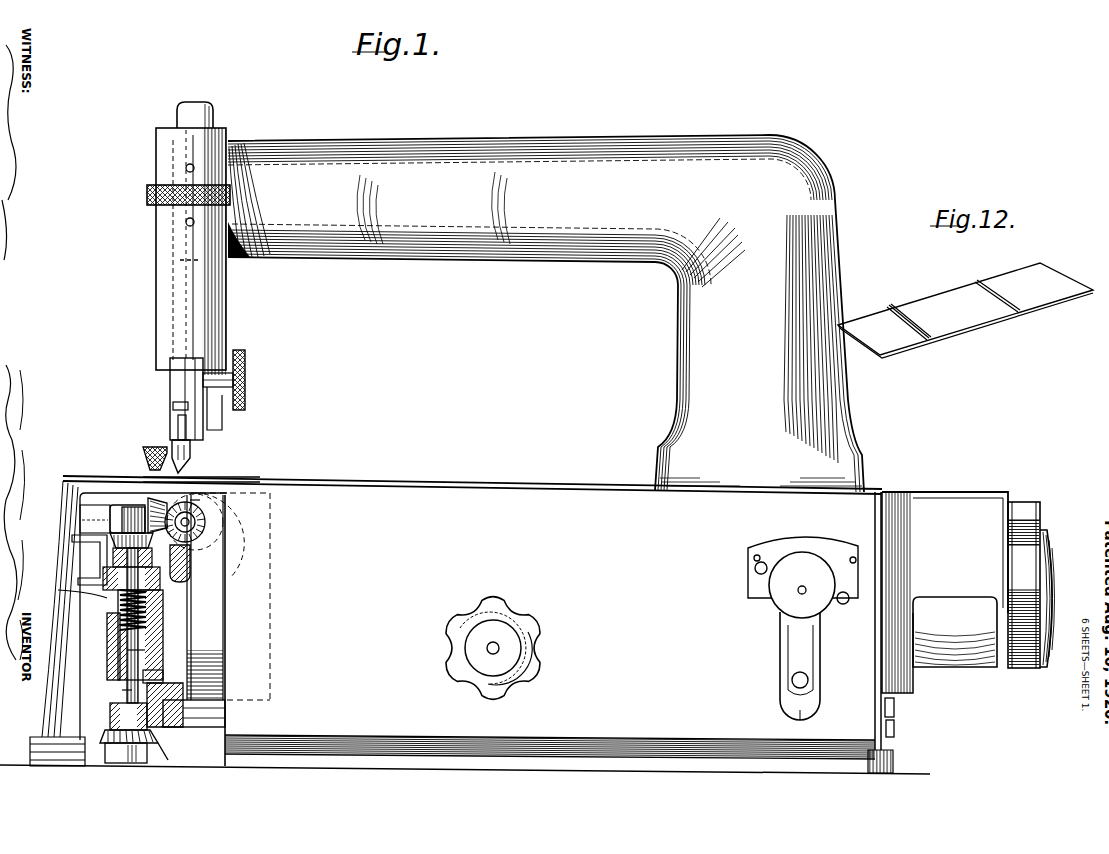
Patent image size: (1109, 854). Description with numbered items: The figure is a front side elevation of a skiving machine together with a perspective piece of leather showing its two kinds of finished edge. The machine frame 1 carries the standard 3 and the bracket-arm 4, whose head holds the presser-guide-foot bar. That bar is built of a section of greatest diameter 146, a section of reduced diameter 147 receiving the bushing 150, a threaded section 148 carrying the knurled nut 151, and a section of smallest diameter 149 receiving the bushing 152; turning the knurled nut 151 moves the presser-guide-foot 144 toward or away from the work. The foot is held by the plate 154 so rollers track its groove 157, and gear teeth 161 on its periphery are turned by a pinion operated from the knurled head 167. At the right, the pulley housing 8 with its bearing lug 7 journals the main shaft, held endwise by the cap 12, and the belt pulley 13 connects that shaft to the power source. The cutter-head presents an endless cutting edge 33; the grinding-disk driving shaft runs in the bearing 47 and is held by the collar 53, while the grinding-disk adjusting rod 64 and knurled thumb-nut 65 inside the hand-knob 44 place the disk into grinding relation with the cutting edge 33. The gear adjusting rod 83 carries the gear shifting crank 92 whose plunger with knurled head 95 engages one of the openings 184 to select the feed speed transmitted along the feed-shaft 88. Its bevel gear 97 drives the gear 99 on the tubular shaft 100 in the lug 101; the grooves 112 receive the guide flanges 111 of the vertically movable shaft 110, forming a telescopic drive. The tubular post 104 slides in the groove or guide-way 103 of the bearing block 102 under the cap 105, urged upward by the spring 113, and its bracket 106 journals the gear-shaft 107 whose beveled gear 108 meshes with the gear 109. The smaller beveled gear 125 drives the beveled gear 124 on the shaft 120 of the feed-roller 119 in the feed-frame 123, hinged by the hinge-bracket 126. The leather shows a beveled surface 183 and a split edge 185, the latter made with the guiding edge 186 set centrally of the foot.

In FIG. 1, the machine frame 1 is at (465, 625).
In FIG. 1, the standard 3 is at (838, 253).
In FIG. 1, the bracket-arm 4 is at (547, 140).
In FIG. 1, the bearing lug 7 is at (1026, 510).
In FIG. 1, the pulley housing 8 is at (946, 500).
In FIG. 1, the cap 12 is at (1053, 580).
In FIG. 1, the belt pulley 13 is at (955, 632).
In FIG. 1, the cutting edge 33 is at (200, 660).
In FIG. 1, the hand-knob 44 is at (500, 605).
In FIG. 1, the bearing 47 is at (895, 707).
In FIG. 1, the collar 53 is at (894, 728).
In FIG. 1, the grinding-disk adjusting rod 64 is at (500, 645).
In FIG. 1, the knurled thumb-nut 65 is at (505, 630).
In FIG. 1, the gear adjusting rod 83 is at (806, 678).
In FIG. 1, the feed-shaft 88 is at (205, 713).
In FIG. 1, the gear shifting crank 92 is at (805, 641).
In FIG. 1, the knurled head 95 is at (803, 577).
In FIG. 1, the bevel gear 97 is at (175, 738).
In FIG. 1, the gear 99 is at (150, 745).
In FIG. 1, the tubular shaft 100 is at (118, 716).
In FIG. 1, the lug 101 is at (130, 710).
In FIG. 1, the bearing block 102 is at (163, 625).
In FIG. 1, the groove or guide-way 103 is at (163, 648).
In FIG. 1, the tubular post 104 is at (110, 596).
In FIG. 1, the cap 105 is at (108, 655).
In FIG. 1, the bracket 106 is at (90, 560).
In FIG. 1, the gear-shaft 107 is at (138, 508).
In FIG. 1, the beveled gear 108 is at (170, 503).
In FIG. 1, the gear 109 is at (110, 540).
In FIG. 1, the vertically movable shaft 110 is at (140, 582).
In FIG. 1, the guide flanges 111 is at (165, 672).
In FIG. 1, the grooves 112 is at (130, 688).
In FIG. 1, the spring 113 is at (147, 602).
In FIG. 1, the feed-roller 119 is at (205, 548).
In FIG. 1, the shaft 120 is at (200, 535).
In FIG. 1, the feed-frame 123 is at (190, 558).
In FIG. 1, the beveled gear 124 is at (200, 500).
In FIG. 1, the beveled gear 125 is at (195, 523).
In FIG. 1, the hinge-bracket 126 is at (118, 505).
In FIG. 1, the presser-guide-foot 144 is at (190, 456).
In FIG. 1, the section of greatest diameter 146 is at (198, 311).
In FIG. 1, the section of reduced diameter 147 is at (196, 282).
In FIG. 1, the threaded section 148 is at (196, 222).
In FIG. 1, the section of smallest diameter 149 is at (212, 137).
In FIG. 1, the bushing 150 is at (180, 267).
In FIG. 1, the knurled nut 151 is at (225, 198).
In FIG. 1, the bushing 152 is at (178, 152).
In FIG. 1, the plate 154 is at (172, 380).
In FIG. 1, the groove 157 is at (178, 426).
In FIG. 1, the gear teeth 161 is at (173, 408).
In FIG. 1, the knurled head 167 is at (245, 378).
In FIG. 12, the beveled surface 183 is at (1050, 302).
In FIG. 1, the openings 184 is at (758, 574).
In FIG. 12, the split edge 185 is at (908, 340).
In FIG. 1, the guiding edge 186 is at (185, 474).